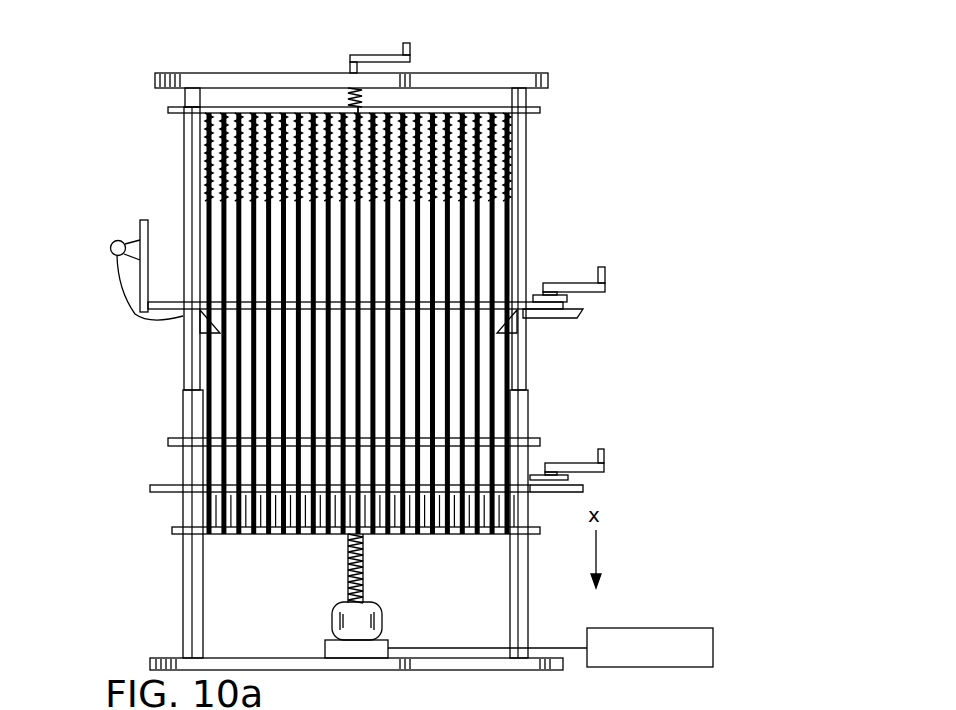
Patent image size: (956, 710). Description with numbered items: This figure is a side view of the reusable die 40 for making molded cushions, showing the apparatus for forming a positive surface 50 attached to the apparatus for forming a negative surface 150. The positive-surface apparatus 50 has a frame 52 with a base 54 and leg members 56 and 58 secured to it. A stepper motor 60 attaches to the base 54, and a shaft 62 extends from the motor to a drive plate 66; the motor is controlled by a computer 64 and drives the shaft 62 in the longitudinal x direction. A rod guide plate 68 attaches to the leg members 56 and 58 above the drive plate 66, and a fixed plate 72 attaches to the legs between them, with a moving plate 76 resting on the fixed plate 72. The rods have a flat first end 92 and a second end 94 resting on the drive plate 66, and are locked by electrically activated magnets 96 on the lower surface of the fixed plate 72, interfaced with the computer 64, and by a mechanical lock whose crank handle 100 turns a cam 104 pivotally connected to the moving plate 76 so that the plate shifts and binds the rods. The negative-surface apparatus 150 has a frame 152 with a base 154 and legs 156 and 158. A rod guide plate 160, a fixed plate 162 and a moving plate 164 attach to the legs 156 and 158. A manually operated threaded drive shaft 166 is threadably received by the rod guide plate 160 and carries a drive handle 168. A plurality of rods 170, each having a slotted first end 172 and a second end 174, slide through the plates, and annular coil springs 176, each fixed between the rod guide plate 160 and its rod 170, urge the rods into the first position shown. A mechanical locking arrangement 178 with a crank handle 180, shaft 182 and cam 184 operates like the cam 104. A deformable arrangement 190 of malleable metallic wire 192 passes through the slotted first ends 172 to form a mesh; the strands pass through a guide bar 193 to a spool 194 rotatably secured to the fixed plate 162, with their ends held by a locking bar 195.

The reusable die 40 is at (248, 62).
The apparatus for forming a positive surface 50 is at (556, 424).
The frame 52 is at (528, 620).
The base 54 is at (470, 670).
The leg member 56 is at (528, 565).
The leg member 58 is at (184, 600).
The stepper motor 60 is at (380, 615).
The shaft 62 is at (363, 552).
The computer 64 is at (632, 628).
The drive plate 66 is at (538, 531).
The rod guide plate 68 is at (540, 440).
The fixed plate 72 is at (584, 490).
The moving plate 76 is at (150, 490).
The first end 92 is at (520, 330).
The second end 94 is at (505, 528).
The electrically activated magnet 96 is at (228, 495).
The crank handle 100 is at (604, 456).
The cam 104 is at (569, 478).
The apparatus for forming a negative surface 150 is at (535, 173).
The frame 152 is at (548, 82).
The base 154 is at (510, 73).
The leg 156 is at (527, 210).
The leg 158 is at (190, 210).
The rod guide plate 160 is at (540, 110).
The fixed plate 162 is at (582, 313).
The moving plate 164 is at (528, 300).
The threaded drive shaft 166 is at (352, 100).
The drive handle 168 is at (411, 47).
The rod 170 is at (207, 218).
The slotted first end 172 is at (207, 333).
The second end 174 is at (185, 108).
The coil spring 176 is at (207, 148).
The mechanical locking arrangement 178 is at (608, 263).
The crank handle 180 is at (606, 276).
The shaft 182 is at (557, 292).
The cam 184 is at (570, 299).
The deformable arrangement 190 is at (112, 280).
The wire 192 is at (125, 307).
The guide bar 193 is at (207, 330).
The spool 194 is at (110, 250).
The locking bar 195 is at (512, 326).